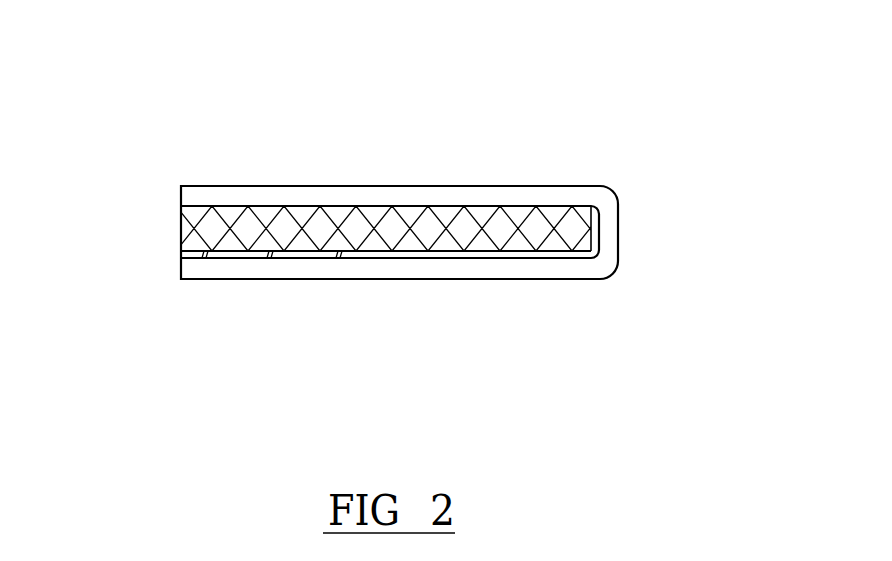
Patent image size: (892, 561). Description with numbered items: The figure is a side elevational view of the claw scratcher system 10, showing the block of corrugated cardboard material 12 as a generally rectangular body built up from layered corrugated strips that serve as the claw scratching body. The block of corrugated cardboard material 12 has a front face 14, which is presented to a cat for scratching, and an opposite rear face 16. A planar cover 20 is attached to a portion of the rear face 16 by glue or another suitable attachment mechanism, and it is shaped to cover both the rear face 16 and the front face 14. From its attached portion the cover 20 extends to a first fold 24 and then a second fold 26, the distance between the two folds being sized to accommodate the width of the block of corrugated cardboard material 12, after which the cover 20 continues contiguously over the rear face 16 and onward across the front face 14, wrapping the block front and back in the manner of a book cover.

The claw scratcher system 10 is at (420, 238).
The block of corrugated cardboard material 12 is at (413, 215).
The front face 14 is at (200, 204).
The rear face 16 is at (200, 242).
The planar cover 20 is at (390, 306).
The first fold 24 is at (625, 277).
The second fold 26 is at (625, 190).